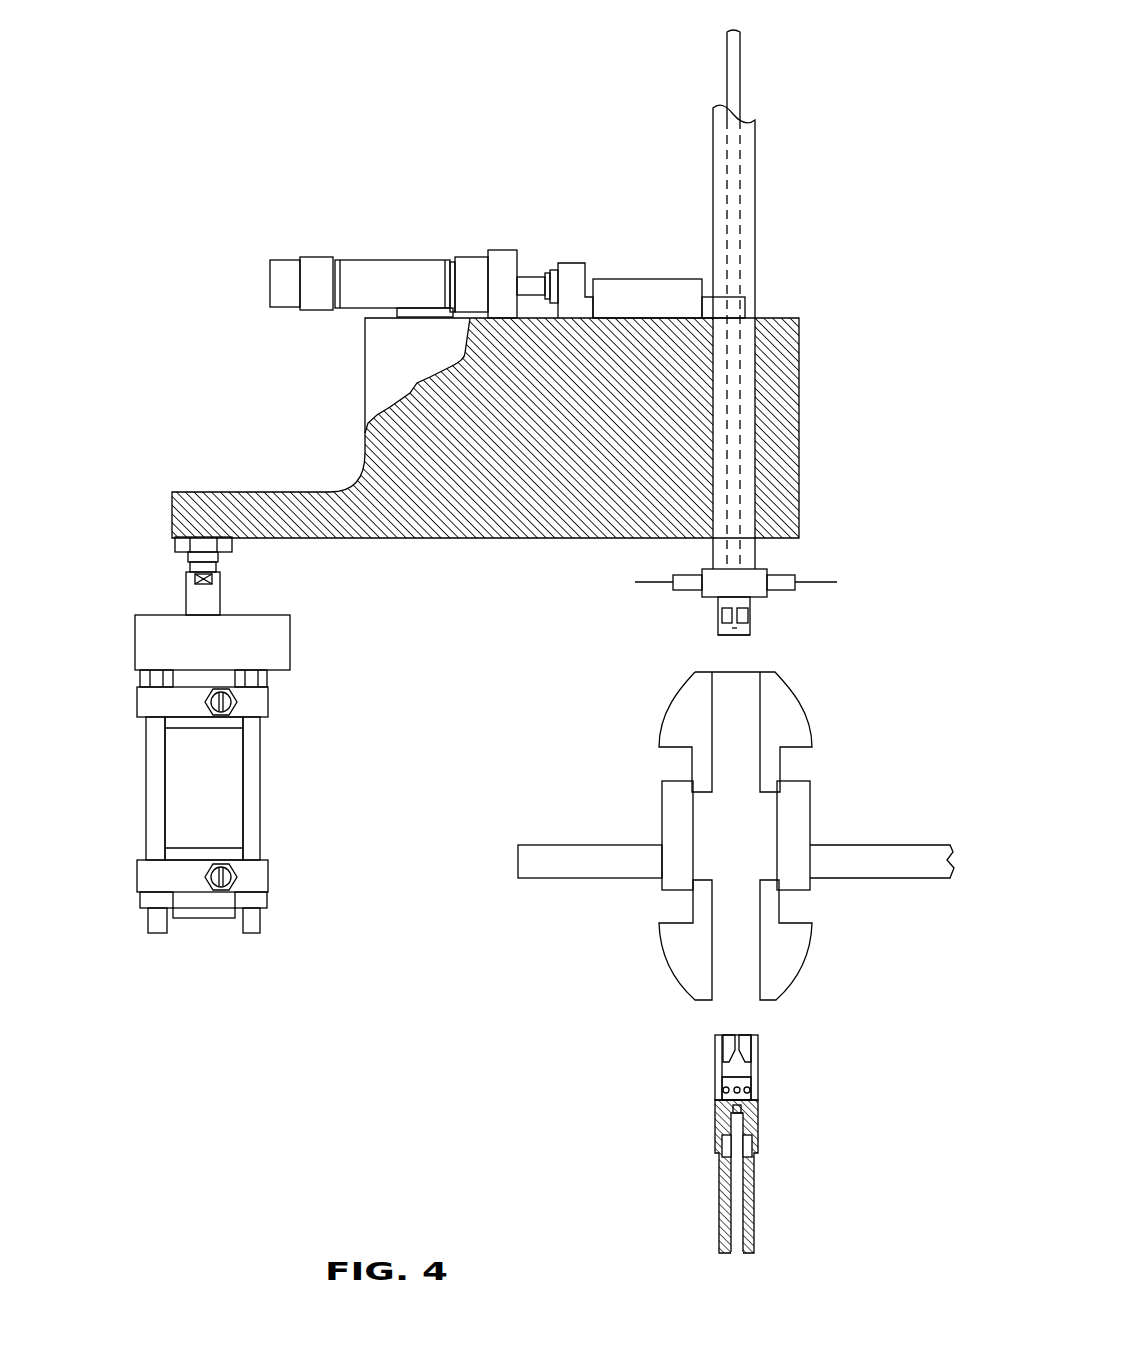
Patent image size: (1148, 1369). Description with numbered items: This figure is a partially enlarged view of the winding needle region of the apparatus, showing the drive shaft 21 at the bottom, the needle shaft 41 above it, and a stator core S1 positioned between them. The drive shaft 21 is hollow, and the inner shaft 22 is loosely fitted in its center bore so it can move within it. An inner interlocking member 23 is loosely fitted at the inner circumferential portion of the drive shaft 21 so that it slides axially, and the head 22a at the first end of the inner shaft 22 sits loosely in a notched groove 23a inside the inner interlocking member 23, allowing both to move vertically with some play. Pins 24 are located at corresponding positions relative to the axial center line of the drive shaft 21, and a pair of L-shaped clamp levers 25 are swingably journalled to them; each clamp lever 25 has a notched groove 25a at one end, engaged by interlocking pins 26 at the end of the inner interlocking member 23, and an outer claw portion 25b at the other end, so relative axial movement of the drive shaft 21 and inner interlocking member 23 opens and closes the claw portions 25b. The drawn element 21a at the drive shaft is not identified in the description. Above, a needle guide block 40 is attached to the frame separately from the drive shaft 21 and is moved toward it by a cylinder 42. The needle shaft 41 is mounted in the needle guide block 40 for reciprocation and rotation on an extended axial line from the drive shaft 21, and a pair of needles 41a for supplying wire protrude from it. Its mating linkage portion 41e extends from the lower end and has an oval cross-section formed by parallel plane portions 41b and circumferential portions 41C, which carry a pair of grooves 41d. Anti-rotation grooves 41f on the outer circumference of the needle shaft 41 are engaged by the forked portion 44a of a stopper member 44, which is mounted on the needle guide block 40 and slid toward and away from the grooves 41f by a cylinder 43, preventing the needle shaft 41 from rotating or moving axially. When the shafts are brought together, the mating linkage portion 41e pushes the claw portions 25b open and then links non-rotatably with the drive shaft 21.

The needle guide block 40 is at (803, 430).
The needle shaft 41 is at (755, 153).
The needles 41a is at (677, 590).
The parallel plane portions 41b is at (733, 628).
The circumferential portions 41C is at (748, 628).
The grooves 41d is at (723, 618).
The mating linkage portion 41e is at (750, 632).
The anti-rotation grooves 41f is at (747, 302).
The cylinder 42 is at (145, 787).
The cylinder 43 is at (270, 262).
The stopper member 44 is at (583, 263).
The forked portion 44a is at (704, 294).
The stator core S1 is at (678, 945).
The drive shaft 21 is at (725, 1183).
The bore 21a is at (740, 1237).
The inner shaft 22 is at (738, 1210).
The head 22a is at (720, 1140).
The inner interlocking member 23 is at (748, 1132).
The notched groove 23a is at (745, 1112).
The pins 24 is at (735, 1092).
The clamp levers 25 is at (722, 1060).
The notched groove 25a is at (738, 1098).
The outer claw portion 25b is at (718, 1025).
The interlocking pins 26 is at (730, 1088).